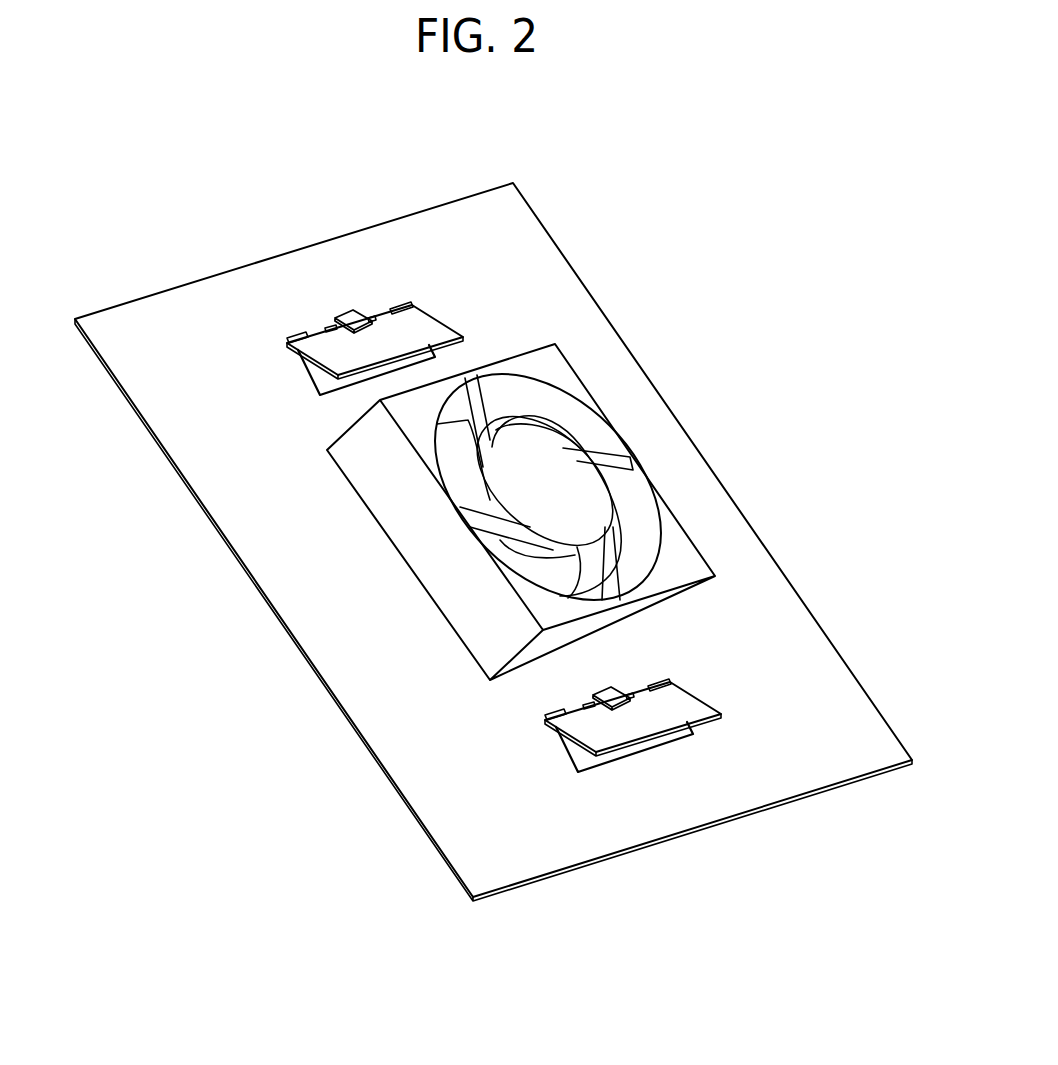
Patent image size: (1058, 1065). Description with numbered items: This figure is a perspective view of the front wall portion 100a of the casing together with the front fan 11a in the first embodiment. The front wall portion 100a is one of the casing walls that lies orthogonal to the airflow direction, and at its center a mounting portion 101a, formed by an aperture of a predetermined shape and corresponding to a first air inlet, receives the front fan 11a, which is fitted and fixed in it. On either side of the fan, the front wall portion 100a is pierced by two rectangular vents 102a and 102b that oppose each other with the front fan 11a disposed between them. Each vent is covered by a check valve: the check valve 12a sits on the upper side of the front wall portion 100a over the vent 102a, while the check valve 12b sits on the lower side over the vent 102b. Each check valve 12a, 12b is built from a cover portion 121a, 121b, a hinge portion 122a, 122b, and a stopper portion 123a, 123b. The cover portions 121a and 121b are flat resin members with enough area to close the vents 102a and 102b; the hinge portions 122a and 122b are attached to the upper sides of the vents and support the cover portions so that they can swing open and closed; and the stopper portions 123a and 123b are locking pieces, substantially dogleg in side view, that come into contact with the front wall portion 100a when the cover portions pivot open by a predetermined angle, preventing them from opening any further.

The front wall portion 100a is at (670, 212).
The front fan 11a is at (643, 425).
The mounting portion 101a is at (403, 563).
The check valve 12a is at (298, 305).
The vent 102a is at (313, 380).
The cover portion 121a is at (440, 318).
The hinge portion 122a is at (400, 306).
The stopper portion 123a is at (353, 337).
The check valve 12b is at (642, 763).
The vent 102b is at (571, 757).
The cover portion 121b is at (690, 700).
The hinge portion 122b is at (628, 689).
The stopper portion 123b is at (611, 714).